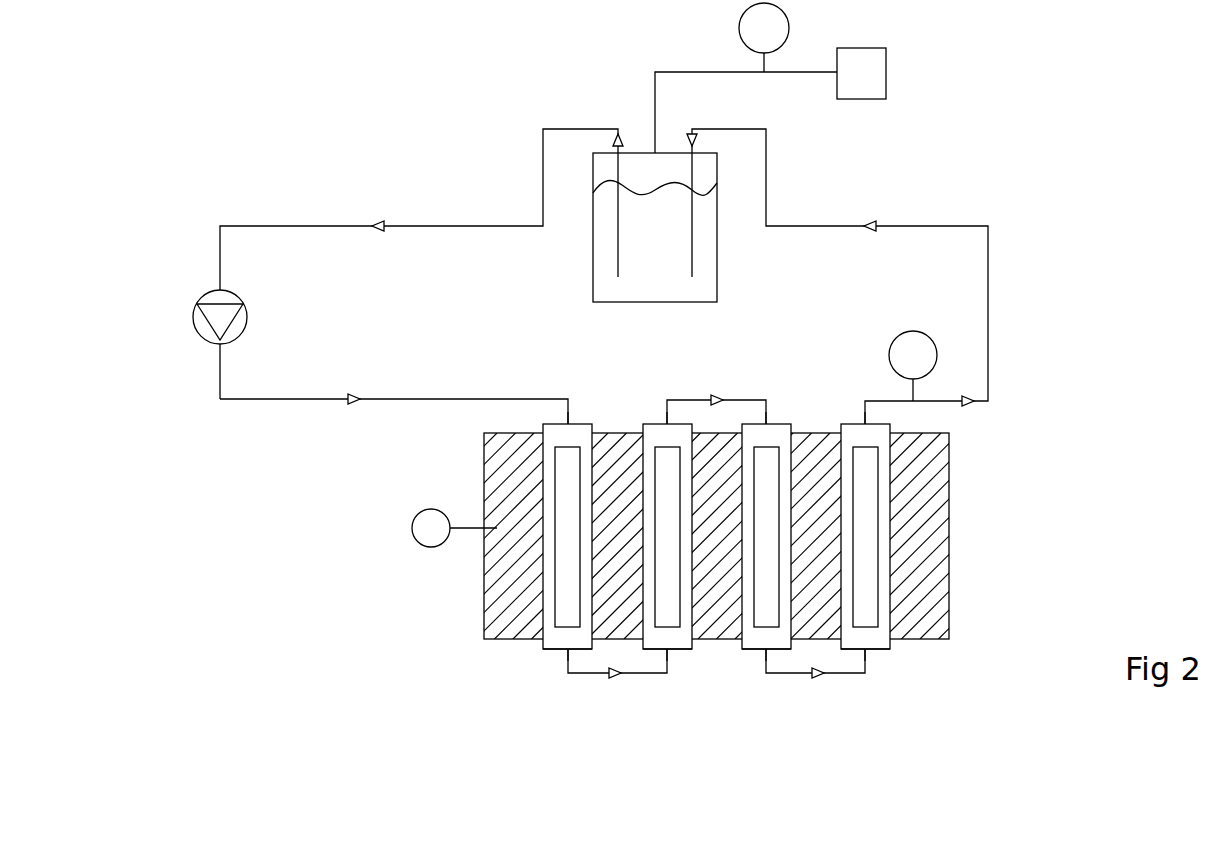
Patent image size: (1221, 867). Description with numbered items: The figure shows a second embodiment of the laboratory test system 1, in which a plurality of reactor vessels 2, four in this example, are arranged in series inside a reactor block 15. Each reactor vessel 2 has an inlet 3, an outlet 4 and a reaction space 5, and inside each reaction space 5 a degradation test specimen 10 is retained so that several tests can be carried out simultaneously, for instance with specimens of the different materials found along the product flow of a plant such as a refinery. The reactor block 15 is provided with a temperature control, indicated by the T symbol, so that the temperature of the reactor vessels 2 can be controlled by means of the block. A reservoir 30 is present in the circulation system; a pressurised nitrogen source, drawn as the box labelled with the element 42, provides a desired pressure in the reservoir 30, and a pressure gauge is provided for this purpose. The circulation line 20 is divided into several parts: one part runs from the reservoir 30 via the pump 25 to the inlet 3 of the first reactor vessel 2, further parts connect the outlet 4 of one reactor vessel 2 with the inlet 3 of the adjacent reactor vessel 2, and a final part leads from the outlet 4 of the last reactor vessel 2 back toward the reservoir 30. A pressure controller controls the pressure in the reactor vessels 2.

The test system 1 is at (326, 536).
The reactor vessel 2 is at (548, 651).
The inlet 3 is at (566, 422).
The outlet 4 is at (668, 423).
The reaction space 5 is at (648, 642).
The degradation test specimen 10 is at (668, 462).
The reactor block 15 is at (492, 575).
The circulation line 20 is at (335, 405).
The pump 25 is at (207, 290).
The reservoir 30 is at (705, 281).
The nitrogen supply 42 is at (887, 82).